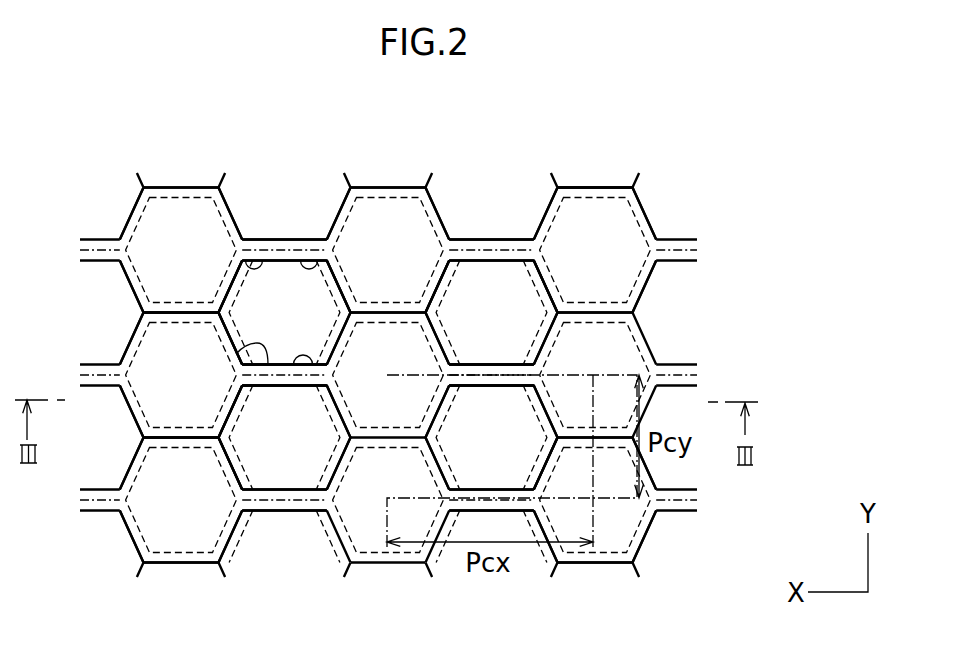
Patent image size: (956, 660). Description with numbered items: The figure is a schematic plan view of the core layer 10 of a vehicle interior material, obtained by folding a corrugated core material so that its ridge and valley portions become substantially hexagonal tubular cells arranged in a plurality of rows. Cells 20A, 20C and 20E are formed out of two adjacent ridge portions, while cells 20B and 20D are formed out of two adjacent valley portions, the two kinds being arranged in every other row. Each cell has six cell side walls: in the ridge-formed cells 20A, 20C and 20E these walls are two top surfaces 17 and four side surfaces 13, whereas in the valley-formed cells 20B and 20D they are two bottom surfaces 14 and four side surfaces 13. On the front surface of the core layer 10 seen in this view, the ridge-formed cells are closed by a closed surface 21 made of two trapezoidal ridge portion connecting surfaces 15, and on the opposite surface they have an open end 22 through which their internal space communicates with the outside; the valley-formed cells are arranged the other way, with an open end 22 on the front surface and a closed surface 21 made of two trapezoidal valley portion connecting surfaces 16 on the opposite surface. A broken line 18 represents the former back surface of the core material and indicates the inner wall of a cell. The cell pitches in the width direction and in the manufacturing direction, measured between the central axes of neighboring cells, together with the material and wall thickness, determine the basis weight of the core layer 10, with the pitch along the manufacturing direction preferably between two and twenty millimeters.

The core layer 10 is at (725, 190).
The side surface 13 is at (256, 262).
The bottom surface 14 is at (314, 262).
The ridge portion connecting surface 15 is at (180, 207).
The valley portion connecting surface 16 is at (280, 305).
The top surface 17 is at (143, 311).
The broken line 18 is at (594, 187).
The cell 20A is at (170, 507).
The cell 20B is at (248, 437).
The cell 20C is at (389, 233).
The cell 20D is at (492, 298).
The cell 20E is at (604, 247).
The closed surface 21 is at (609, 520).
The open end 22 is at (493, 420).